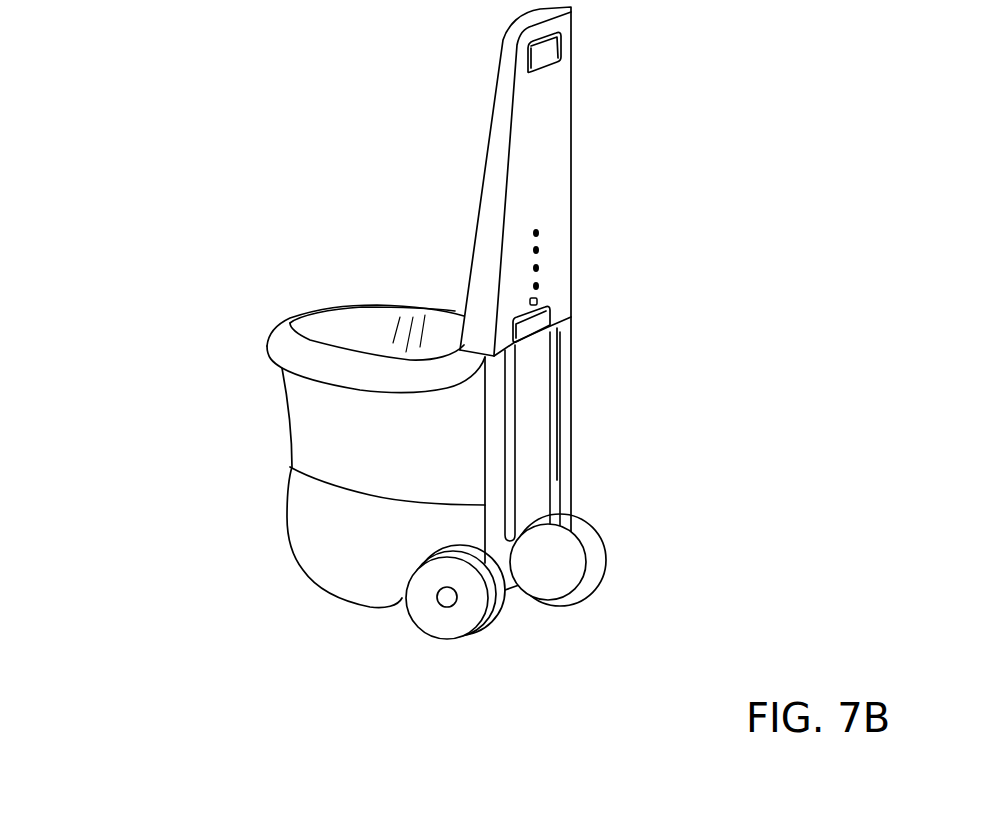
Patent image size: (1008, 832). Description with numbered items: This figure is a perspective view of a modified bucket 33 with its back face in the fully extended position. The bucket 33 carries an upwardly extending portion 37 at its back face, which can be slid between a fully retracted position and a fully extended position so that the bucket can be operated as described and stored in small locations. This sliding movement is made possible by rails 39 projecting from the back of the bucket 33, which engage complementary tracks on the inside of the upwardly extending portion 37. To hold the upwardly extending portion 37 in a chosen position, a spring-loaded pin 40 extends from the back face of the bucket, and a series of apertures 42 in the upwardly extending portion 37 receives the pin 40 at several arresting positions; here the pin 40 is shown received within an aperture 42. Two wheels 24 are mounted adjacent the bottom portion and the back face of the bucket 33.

The bucket 33 is at (220, 188).
The upwardly extending portion 37 is at (540, 125).
The rails 39 is at (510, 441).
The apertures 42 is at (539, 286).
The spring-loaded pin 40 is at (538, 301).
The wheels 24 is at (466, 613).